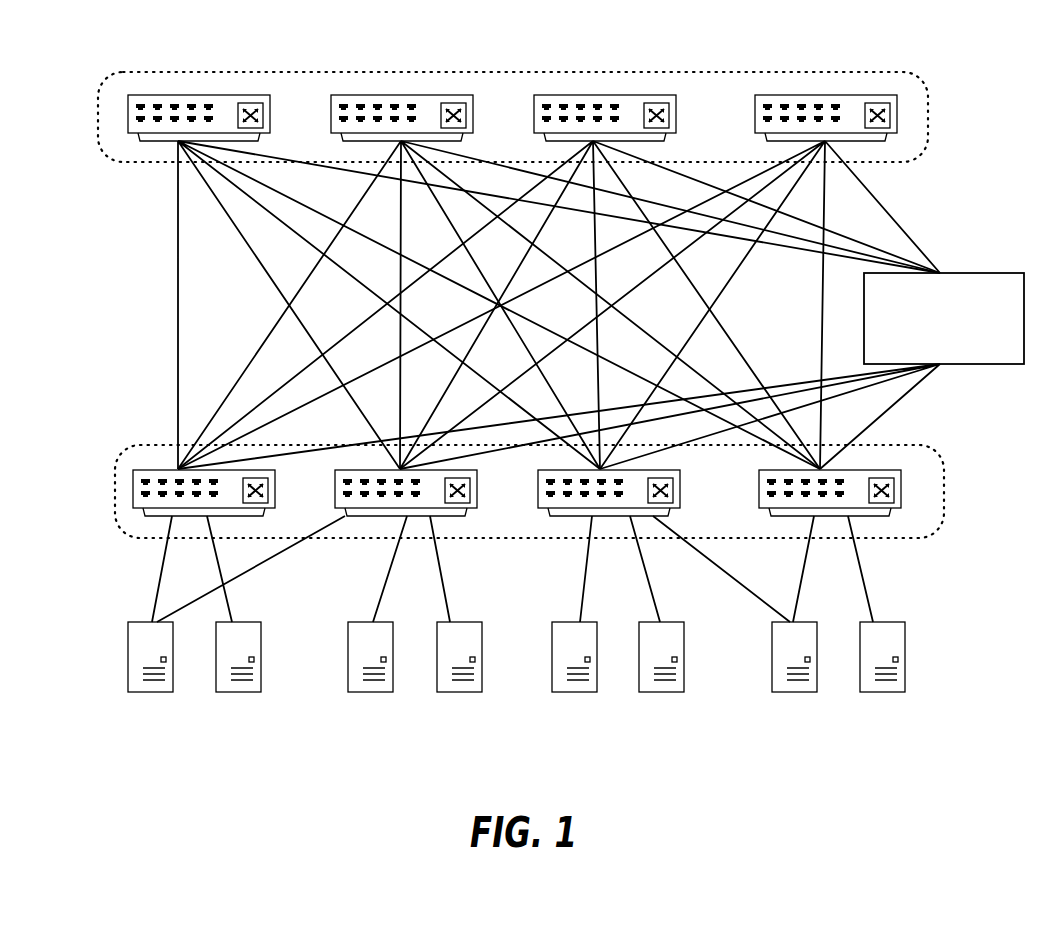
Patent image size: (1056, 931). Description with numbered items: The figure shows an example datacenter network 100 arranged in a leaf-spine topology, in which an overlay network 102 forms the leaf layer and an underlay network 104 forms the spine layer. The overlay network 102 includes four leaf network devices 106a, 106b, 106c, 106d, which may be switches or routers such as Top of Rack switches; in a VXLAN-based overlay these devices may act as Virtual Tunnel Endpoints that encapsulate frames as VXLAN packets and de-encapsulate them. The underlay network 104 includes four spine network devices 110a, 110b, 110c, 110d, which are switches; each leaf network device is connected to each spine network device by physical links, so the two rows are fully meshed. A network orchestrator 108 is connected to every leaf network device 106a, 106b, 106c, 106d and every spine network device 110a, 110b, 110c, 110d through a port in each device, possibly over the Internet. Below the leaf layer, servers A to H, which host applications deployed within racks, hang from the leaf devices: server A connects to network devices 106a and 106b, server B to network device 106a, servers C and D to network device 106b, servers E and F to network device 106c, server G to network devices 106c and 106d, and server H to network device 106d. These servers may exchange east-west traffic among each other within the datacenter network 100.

The datacenter network 100 is at (1000, 43).
The overlay network 102 is at (945, 457).
The underlay network 104 is at (928, 138).
The network device 106a is at (133, 500).
The network device 106b is at (380, 515).
The network device 106c is at (553, 515).
The network device 106d is at (782, 515).
The network orchestrator 108 is at (944, 318).
The network device 110a is at (152, 100).
The network device 110b is at (352, 100).
The network device 110c is at (575, 98).
The network device 110d is at (770, 100).